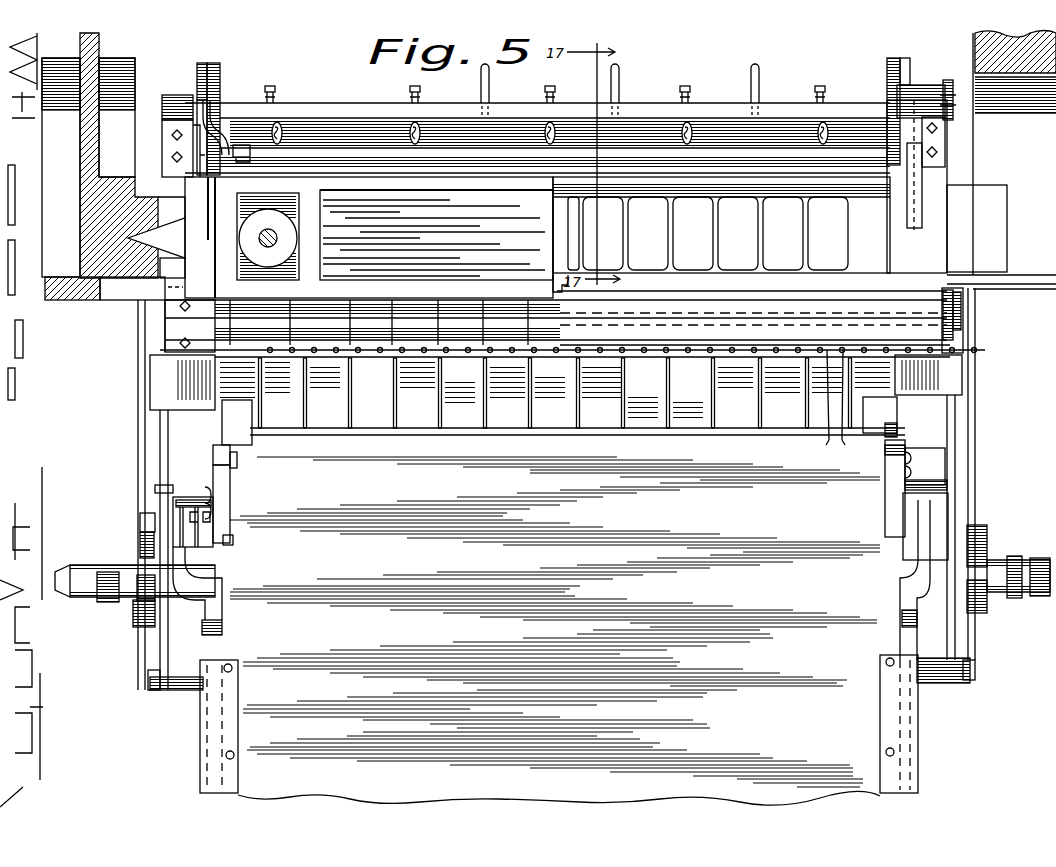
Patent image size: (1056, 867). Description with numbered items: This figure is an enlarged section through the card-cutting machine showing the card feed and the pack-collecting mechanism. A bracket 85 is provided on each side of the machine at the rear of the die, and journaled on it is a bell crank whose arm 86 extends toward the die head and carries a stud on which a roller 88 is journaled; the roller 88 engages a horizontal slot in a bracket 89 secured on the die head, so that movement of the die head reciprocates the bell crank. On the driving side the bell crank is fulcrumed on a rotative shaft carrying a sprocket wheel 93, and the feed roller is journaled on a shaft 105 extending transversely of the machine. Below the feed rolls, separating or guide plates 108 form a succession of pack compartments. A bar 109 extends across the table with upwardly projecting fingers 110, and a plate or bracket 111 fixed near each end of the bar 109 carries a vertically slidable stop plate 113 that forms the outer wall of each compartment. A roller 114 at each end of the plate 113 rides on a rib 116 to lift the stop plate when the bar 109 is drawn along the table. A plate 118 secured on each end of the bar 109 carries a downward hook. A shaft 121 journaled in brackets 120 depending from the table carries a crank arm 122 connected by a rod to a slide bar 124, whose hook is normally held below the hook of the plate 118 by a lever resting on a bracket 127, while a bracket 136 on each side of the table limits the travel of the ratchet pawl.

The bracket 85 is at (190, 137).
The bell crank arm 86 is at (225, 140).
The roller 88 is at (305, 155).
The bracket 89 is at (247, 148).
The sprocket wheel 93 is at (953, 100).
The shaft 105 is at (206, 150).
The separating or guide plates 108 is at (262, 418).
The bar 109 is at (268, 352).
The fingers 110 is at (257, 358).
The plate or bracket 111 is at (250, 417).
The vertically slidable plate 113 is at (843, 430).
The roller 114 is at (914, 437).
The rib 116 is at (220, 537).
The plate 118 is at (953, 362).
The brackets 120 is at (940, 633).
The shaft 121 is at (63, 580).
The crank arm 122 is at (918, 530).
The slide bar 124 is at (955, 428).
The bracket 127 is at (965, 457).
The bracket 136 is at (960, 512).